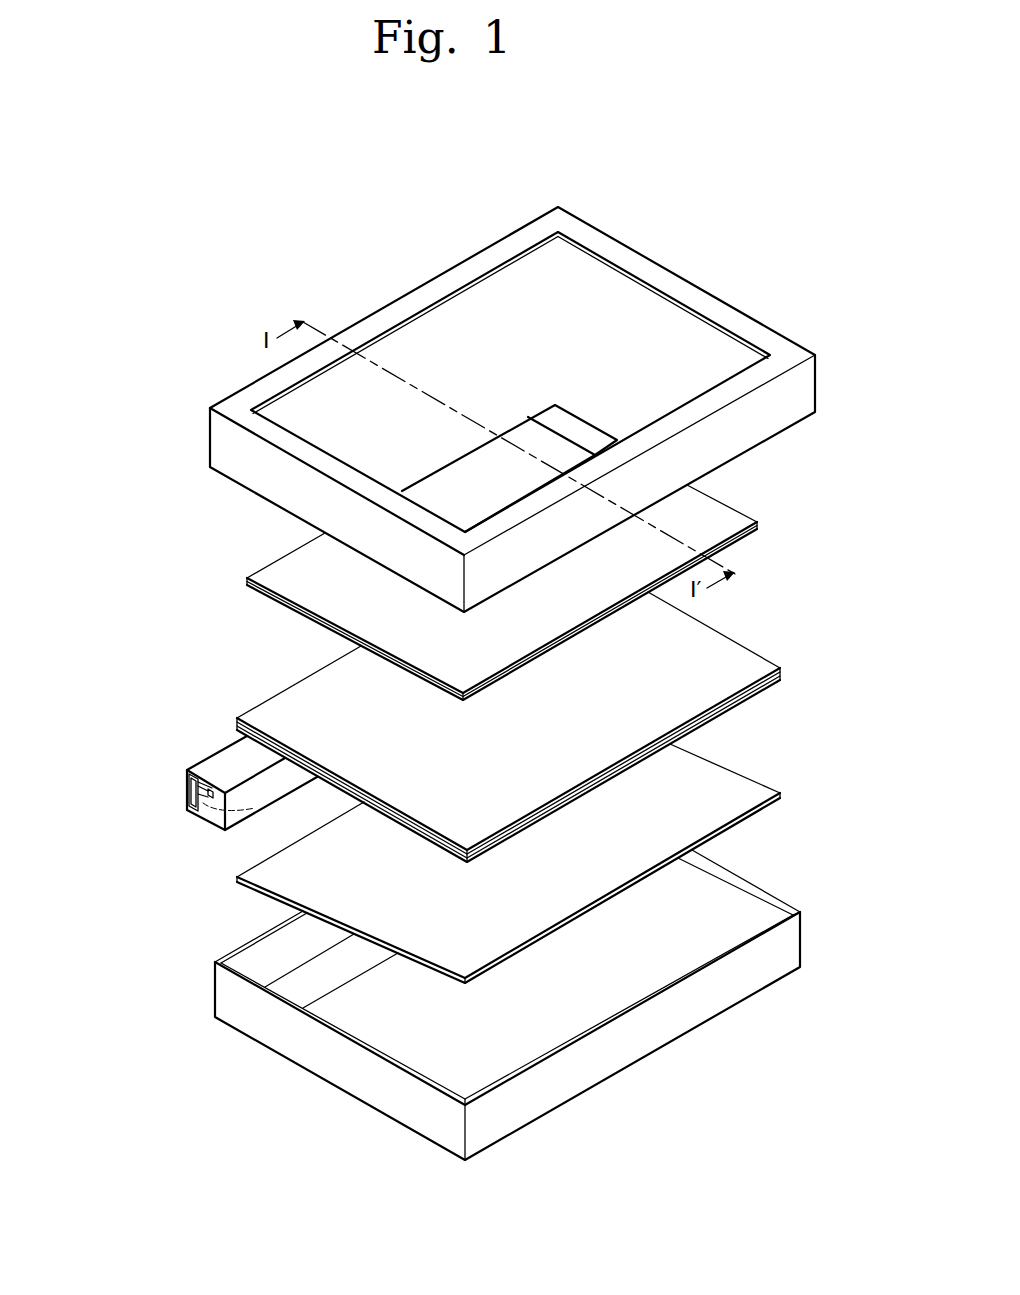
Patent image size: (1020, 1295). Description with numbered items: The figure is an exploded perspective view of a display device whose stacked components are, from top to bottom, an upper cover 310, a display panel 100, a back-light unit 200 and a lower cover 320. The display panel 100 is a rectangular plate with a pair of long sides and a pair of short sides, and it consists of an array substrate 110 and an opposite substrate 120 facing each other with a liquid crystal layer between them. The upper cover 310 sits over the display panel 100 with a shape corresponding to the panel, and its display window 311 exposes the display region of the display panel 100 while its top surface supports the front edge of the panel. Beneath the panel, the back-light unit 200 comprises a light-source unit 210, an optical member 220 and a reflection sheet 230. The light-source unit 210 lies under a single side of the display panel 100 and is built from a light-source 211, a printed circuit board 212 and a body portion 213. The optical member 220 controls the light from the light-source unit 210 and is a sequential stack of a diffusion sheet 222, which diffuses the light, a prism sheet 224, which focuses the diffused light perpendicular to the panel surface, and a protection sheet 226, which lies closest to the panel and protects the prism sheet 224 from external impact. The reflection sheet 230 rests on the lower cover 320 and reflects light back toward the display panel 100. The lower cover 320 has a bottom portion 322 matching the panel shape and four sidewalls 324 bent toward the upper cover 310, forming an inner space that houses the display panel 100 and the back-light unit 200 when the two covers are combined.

The display panel 100 is at (545, 579).
The array substrate 110 is at (727, 517).
The opposite substrate 120 is at (683, 518).
The back-light unit 200 is at (402, 787).
The light-source unit 210 is at (193, 788).
The light-source 211 is at (190, 803).
The printed circuit board 212 is at (188, 786).
The body portion 213 is at (195, 812).
The optical member 220 is at (425, 727).
The diffusion sheet 222 is at (237, 719).
The prism sheet 224 is at (237, 724).
The protection sheet 226 is at (237, 732).
The reflection sheet 230 is at (425, 863).
The upper cover 310 is at (491, 409).
The display window 311 is at (484, 325).
The lower cover 320 is at (459, 1005).
The bottom portion 322 is at (423, 1025).
The sidewalls 324 is at (615, 1047).